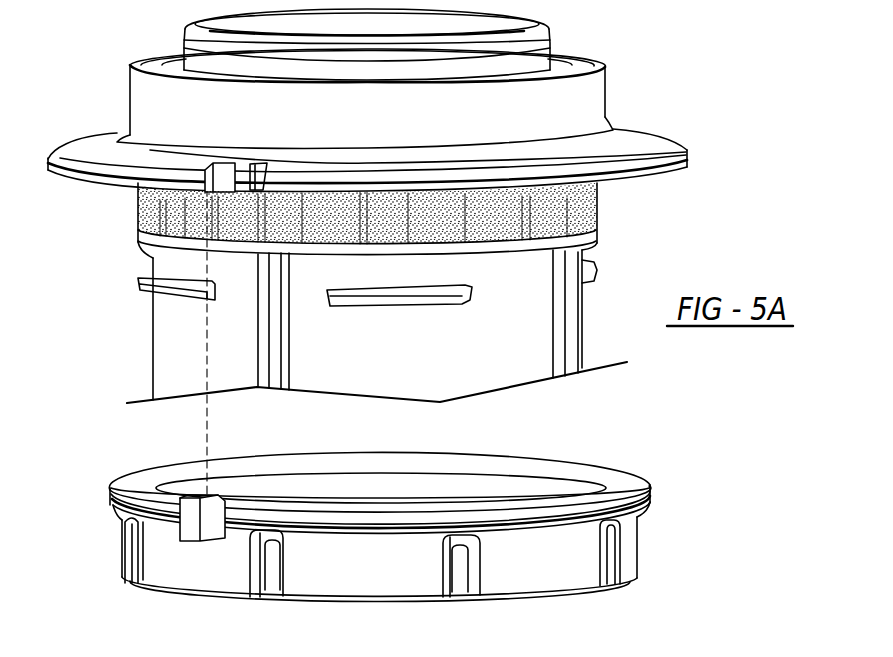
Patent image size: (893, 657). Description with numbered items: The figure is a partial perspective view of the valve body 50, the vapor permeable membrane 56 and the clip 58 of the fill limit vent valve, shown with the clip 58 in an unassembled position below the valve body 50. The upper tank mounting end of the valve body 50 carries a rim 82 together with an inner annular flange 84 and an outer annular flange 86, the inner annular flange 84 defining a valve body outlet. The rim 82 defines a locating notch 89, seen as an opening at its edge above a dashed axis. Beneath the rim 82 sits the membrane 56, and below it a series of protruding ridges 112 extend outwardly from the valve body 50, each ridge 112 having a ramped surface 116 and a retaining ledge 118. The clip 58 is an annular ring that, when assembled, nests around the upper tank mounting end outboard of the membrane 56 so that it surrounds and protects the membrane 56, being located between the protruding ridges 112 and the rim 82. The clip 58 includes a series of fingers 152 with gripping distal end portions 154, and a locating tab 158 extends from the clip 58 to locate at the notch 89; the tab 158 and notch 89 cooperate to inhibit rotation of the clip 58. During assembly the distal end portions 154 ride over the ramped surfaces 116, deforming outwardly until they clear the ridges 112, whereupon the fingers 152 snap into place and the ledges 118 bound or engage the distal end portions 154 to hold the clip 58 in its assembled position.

The valve body 50 is at (173, 370).
The vapor permeable membrane 56 is at (590, 203).
The clip 58 is at (645, 503).
The rim 82 is at (97, 138).
The inner annular flange 84 is at (542, 55).
The outer annular flange 86 is at (580, 100).
The locating notch 89 is at (210, 169).
The protruding ridges 112 is at (150, 290).
The ramped surface 116 is at (187, 297).
The retaining ledge 118 is at (158, 275).
The fingers 152 is at (223, 577).
The gripping distal end portions 154 is at (267, 590).
The locating tab 158 is at (190, 535).